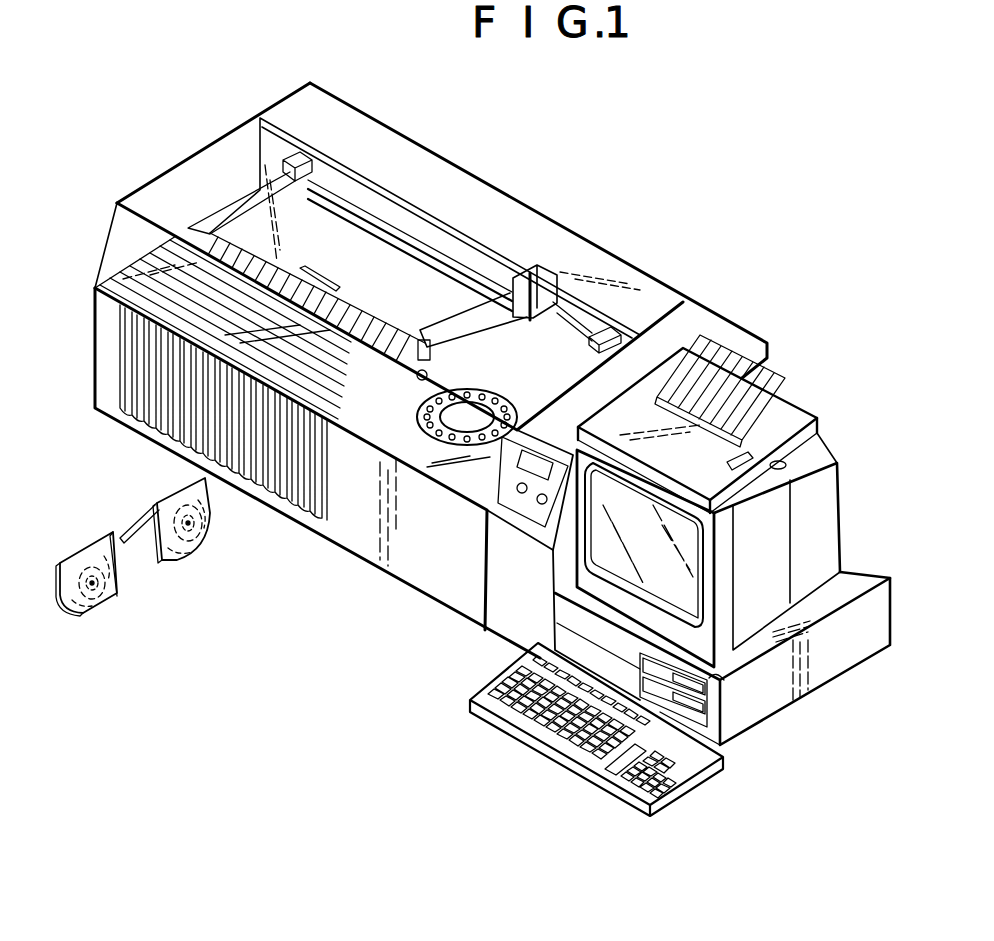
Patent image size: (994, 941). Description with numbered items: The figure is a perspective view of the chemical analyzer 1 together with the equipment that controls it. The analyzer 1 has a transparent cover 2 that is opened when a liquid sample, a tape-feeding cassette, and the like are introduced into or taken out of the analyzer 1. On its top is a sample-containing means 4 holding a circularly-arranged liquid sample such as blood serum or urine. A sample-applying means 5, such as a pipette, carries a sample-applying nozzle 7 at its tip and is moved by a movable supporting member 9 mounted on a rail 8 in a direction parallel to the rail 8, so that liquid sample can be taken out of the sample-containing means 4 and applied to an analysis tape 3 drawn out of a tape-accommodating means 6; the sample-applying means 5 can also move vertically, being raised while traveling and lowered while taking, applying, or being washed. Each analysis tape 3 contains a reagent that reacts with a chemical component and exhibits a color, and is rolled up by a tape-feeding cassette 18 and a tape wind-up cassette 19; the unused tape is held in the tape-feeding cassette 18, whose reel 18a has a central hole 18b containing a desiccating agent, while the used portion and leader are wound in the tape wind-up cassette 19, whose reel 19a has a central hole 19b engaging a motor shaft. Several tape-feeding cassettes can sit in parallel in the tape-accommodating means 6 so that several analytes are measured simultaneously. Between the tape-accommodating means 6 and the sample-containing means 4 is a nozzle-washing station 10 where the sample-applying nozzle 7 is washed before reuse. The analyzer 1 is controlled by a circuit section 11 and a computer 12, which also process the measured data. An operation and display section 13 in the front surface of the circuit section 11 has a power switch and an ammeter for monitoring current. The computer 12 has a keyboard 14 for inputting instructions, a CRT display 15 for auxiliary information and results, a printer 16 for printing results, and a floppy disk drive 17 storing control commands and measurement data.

The chemical analyzer 1 is at (508, 170).
The transparent cover 2 is at (193, 175).
The analysis tape 3 is at (125, 540).
The sample-containing means 4 is at (523, 400).
The sample-applying means 5 is at (463, 302).
The tape-accommodating means 6 is at (352, 243).
The sample-applying nozzle 7 is at (430, 360).
The rail 8 is at (596, 325).
The movable supporting member 9 is at (535, 292).
The nozzle-washing station 10 is at (418, 380).
The circuit section 11 is at (517, 625).
The computer 12 is at (850, 505).
The operation and display section 13 is at (530, 505).
The keyboard 14 is at (497, 705).
The CRT display 15 is at (693, 586).
The printer 16 is at (783, 420).
The floppy disk drive 17 is at (724, 682).
The tape-feeding cassette 18 is at (203, 533).
The reel 18a is at (183, 560).
The hole 18b is at (210, 520).
The tape wind-up cassette 19 is at (120, 589).
The reel 19a is at (83, 618).
The hole 19b is at (96, 588).